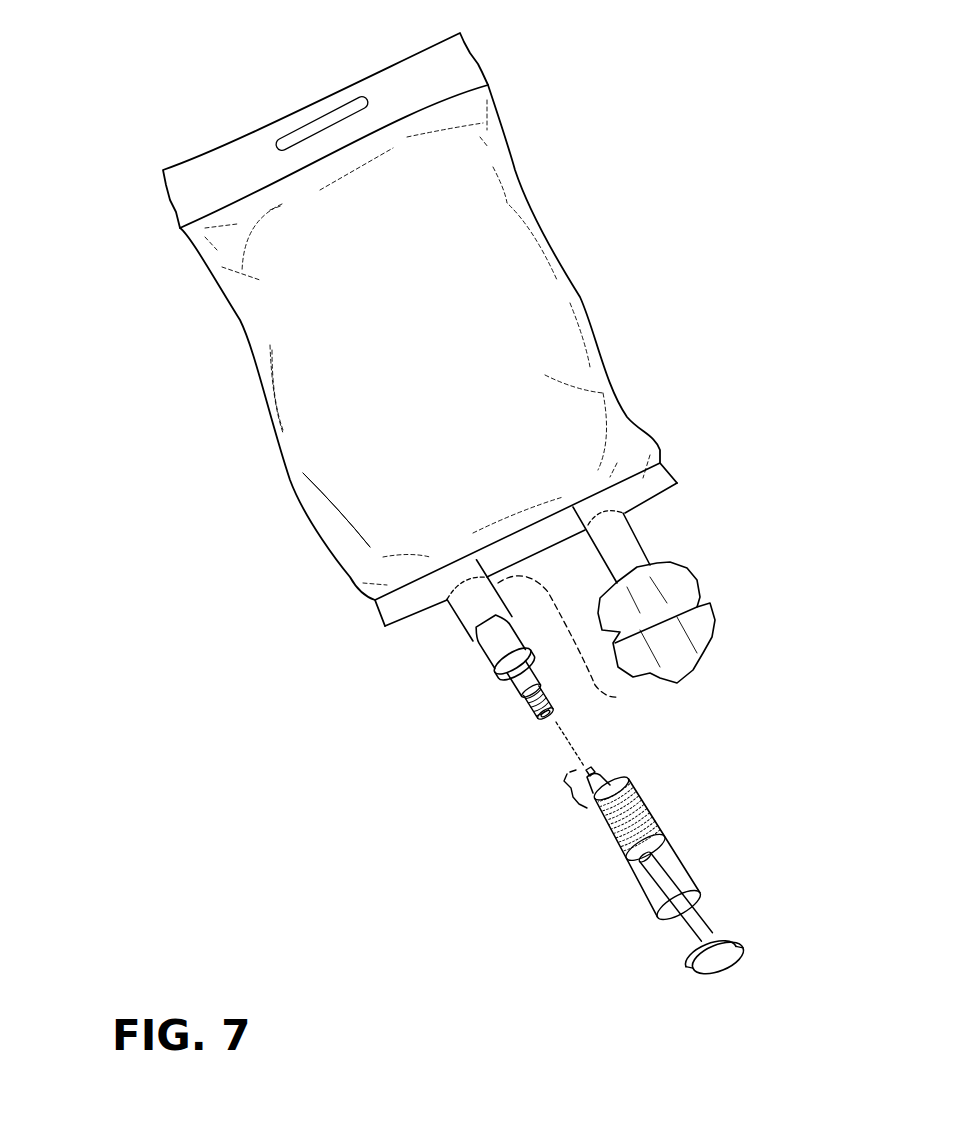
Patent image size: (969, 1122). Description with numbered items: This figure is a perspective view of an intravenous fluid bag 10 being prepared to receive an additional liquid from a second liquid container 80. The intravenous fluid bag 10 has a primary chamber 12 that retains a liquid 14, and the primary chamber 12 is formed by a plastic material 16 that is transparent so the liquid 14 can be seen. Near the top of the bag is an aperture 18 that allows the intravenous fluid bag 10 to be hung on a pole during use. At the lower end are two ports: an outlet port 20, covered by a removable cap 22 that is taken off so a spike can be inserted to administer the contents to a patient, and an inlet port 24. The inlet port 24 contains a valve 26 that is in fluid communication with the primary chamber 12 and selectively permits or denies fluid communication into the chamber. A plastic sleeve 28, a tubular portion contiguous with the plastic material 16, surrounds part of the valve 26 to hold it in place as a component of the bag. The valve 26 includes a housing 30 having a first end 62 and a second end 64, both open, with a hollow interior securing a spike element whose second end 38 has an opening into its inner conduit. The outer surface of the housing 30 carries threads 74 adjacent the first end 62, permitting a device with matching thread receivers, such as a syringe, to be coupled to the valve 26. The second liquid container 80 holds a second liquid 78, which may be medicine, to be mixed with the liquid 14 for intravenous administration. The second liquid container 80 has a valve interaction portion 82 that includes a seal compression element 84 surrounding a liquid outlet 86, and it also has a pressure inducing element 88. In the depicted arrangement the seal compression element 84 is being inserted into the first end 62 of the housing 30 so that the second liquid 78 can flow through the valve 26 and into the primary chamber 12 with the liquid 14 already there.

The intravenous fluid bag 10 is at (169, 110).
The primary chamber 12 is at (362, 456).
The liquid 14 is at (345, 363).
The plastic material 16 is at (517, 257).
The aperture 18 is at (313, 122).
The outlet port 20 is at (635, 562).
The removable cap 22 is at (703, 627).
The inlet port 24 is at (447, 600).
The valve 26 is at (484, 663).
The plastic sleeve 28 is at (480, 622).
The housing 30 is at (497, 680).
The second end 38 is at (579, 645).
The first end 62 is at (560, 716).
The second end 64 is at (478, 645).
The threads 74 is at (533, 706).
The second liquid 78 is at (618, 810).
The second liquid container 80 is at (634, 880).
The valve interaction portion 82 is at (559, 794).
The seal compression element 84 is at (585, 771).
The liquid outlet 86 is at (585, 767).
The pressure inducing element 88 is at (710, 963).